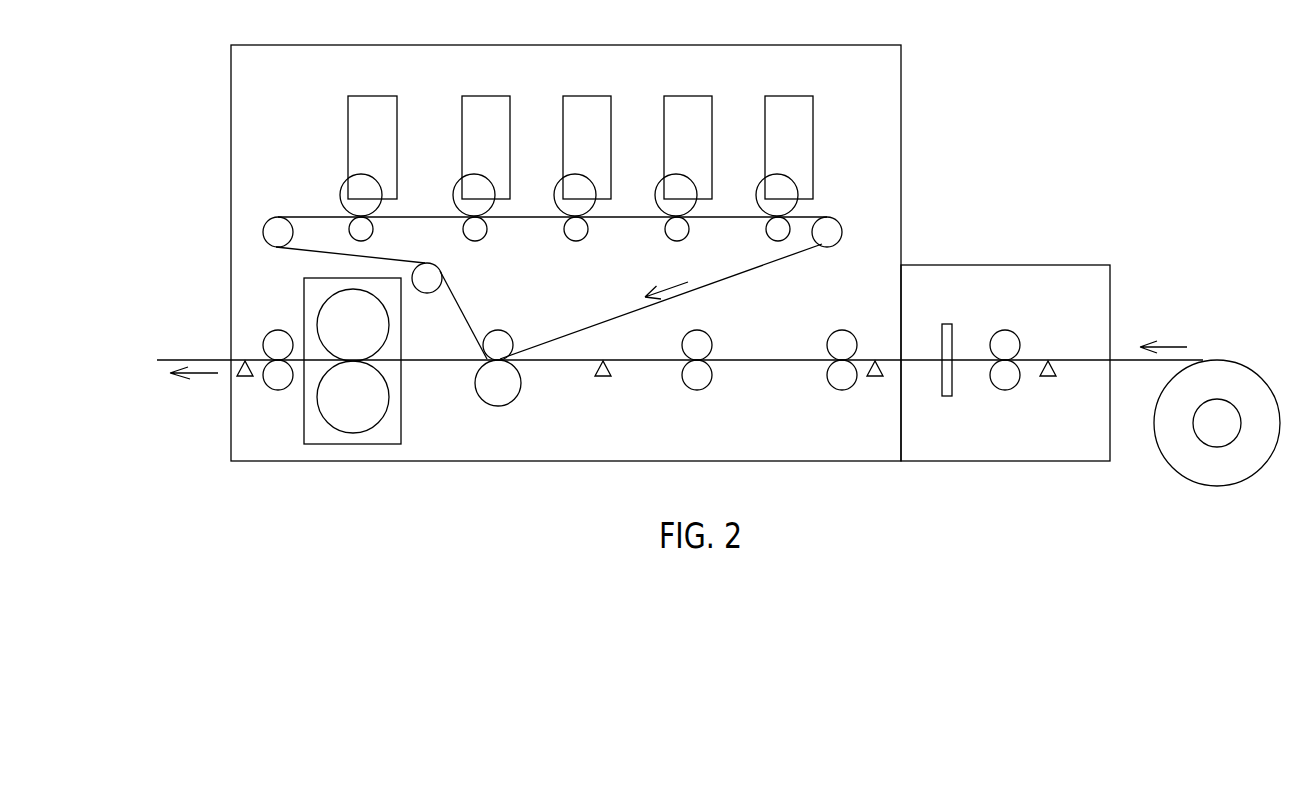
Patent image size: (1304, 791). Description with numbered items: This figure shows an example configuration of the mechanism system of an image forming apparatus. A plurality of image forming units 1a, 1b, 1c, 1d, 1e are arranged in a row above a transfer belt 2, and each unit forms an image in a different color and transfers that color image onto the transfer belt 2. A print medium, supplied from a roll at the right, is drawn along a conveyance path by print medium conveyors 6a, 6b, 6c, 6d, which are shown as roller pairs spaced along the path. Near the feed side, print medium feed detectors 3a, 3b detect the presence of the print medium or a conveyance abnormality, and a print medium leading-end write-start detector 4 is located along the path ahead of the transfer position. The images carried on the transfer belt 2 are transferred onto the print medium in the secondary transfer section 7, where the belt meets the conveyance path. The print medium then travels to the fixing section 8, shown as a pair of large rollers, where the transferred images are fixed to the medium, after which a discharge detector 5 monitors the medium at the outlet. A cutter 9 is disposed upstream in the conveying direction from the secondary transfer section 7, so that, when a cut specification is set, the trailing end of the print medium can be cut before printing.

The image forming unit 1a is at (375, 96).
The image forming unit 1b is at (489, 96).
The image forming unit 1c is at (590, 96).
The image forming unit 1d is at (691, 96).
The image forming unit 1e is at (792, 96).
The transfer belt 2 is at (831, 216).
The print medium feed detector 3a is at (1048, 380).
The print medium feed detector 3b is at (875, 380).
The print medium leading-end write-start detector 4 is at (603, 380).
The discharge detector 5 is at (245, 380).
The print medium conveyor 6a is at (1005, 330).
The print medium conveyor 6b is at (842, 330).
The print medium conveyor 6c is at (703, 330).
The print medium conveyor 6d is at (278, 330).
The secondary transfer section 7 is at (515, 403).
The fixing section 8 is at (355, 445).
The cutter 9 is at (947, 324).